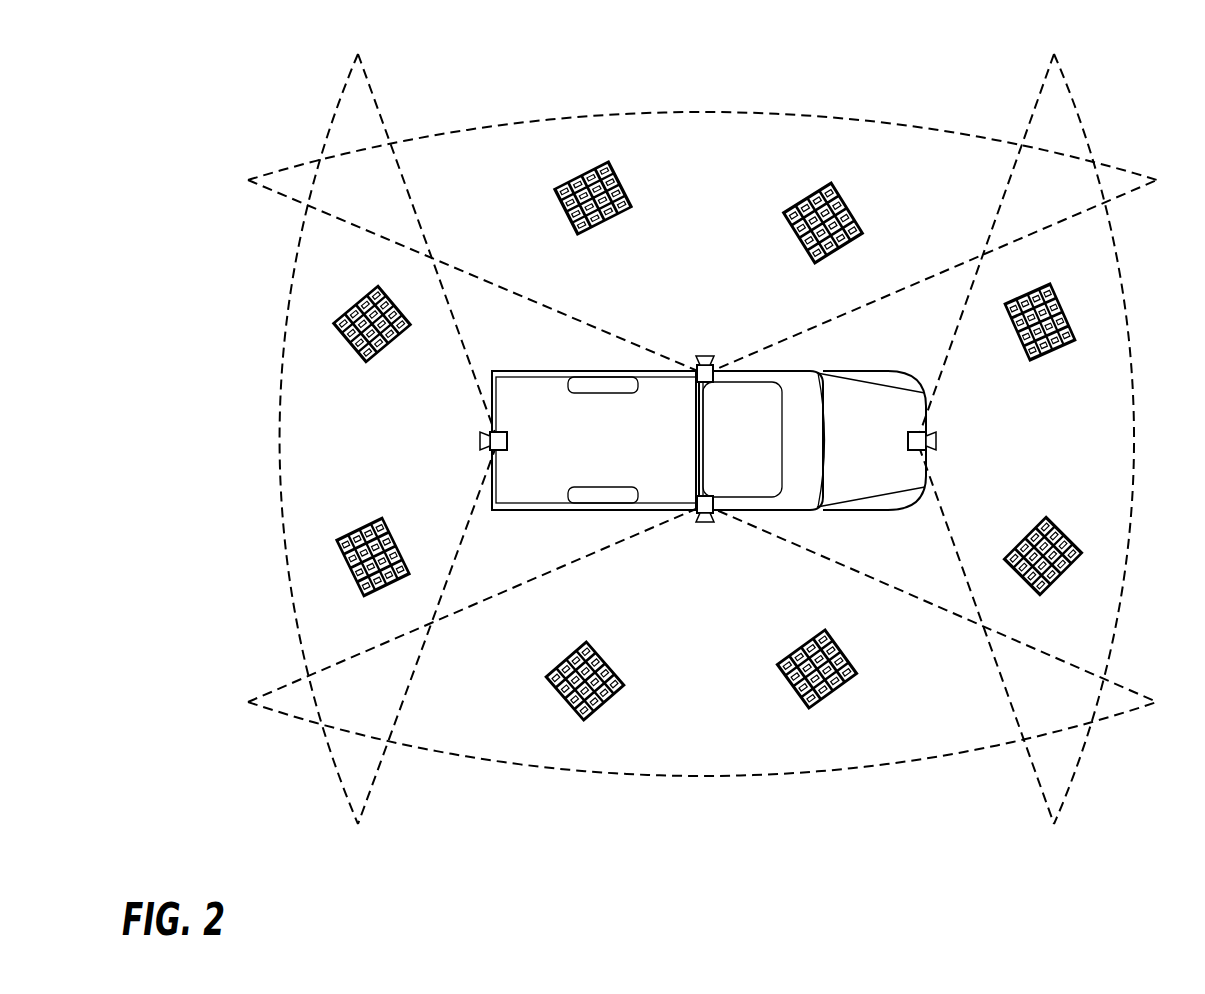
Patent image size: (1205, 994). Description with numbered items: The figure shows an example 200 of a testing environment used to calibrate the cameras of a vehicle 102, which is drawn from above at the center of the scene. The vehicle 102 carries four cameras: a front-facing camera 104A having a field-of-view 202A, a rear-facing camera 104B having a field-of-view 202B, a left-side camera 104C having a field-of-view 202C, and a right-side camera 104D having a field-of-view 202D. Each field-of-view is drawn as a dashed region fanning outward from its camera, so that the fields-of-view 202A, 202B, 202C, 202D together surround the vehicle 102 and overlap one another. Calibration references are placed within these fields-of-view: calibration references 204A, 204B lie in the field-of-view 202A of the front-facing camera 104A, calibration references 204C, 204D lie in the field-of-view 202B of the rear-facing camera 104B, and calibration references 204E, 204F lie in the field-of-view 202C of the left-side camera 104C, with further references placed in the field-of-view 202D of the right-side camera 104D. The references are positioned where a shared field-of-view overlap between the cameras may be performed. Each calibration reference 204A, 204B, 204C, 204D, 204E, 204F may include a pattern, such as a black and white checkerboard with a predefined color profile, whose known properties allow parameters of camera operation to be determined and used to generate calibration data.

The example testing environment 200 is at (182, 42).
The vehicle 102 is at (760, 449).
The front-facing camera 104A is at (938, 441).
The rear-facing camera 104B is at (478, 441).
The left-side camera 104C is at (703, 356).
The right-side camera 104D is at (704, 522).
The field-of-view 202A is at (1121, 448).
The field-of-view 202B is at (343, 448).
The field-of-view 202C is at (722, 150).
The field-of-view 202D is at (723, 763).
The calibration reference 204A is at (1105, 377).
The calibration reference 204B is at (1113, 526).
The calibration reference 204C is at (343, 366).
The calibration reference 204D is at (352, 517).
The calibration reference 204E is at (558, 227).
The calibration reference 204F is at (918, 215).